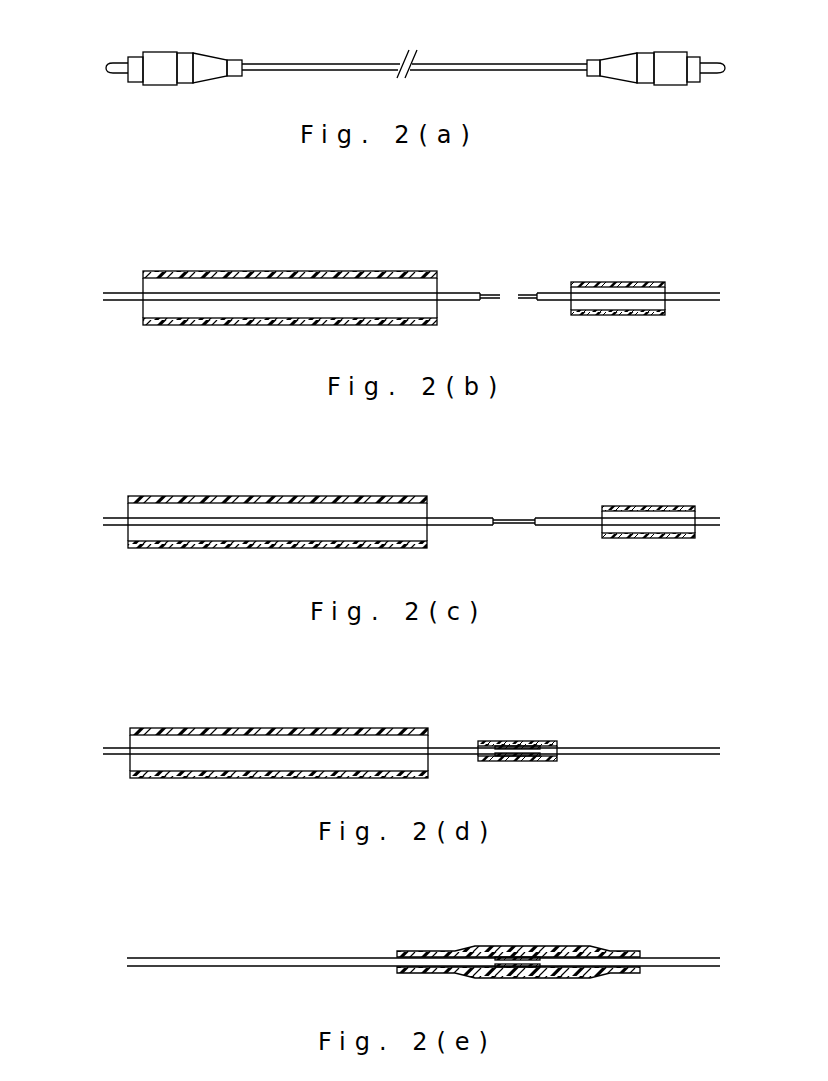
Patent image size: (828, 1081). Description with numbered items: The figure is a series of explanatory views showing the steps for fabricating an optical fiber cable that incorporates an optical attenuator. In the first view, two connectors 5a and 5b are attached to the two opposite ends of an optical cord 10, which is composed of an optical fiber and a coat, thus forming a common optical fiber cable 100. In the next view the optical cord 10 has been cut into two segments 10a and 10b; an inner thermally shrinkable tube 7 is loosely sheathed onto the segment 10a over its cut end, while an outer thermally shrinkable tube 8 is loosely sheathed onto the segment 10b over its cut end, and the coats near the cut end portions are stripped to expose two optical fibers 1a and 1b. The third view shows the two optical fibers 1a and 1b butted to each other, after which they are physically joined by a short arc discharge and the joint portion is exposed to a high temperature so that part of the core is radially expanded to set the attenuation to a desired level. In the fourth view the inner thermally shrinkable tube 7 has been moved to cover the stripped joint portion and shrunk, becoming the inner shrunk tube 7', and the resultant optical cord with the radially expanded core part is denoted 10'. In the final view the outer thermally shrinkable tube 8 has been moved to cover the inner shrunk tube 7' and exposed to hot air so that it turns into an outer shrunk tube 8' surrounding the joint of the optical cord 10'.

In FIG. 2A, the common optical fiber cable 100 is at (470, 46).
In FIG. 2A, the optical cord 10 is at (414, 53).
In FIG. 2A, the connector 5a is at (672, 57).
In FIG. 2A, the connector 5b is at (166, 57).
In FIG. 2B, the outer thermally shrinkable tube 8 is at (290, 283).
In FIG. 2C, the outer thermally shrinkable tube 8 is at (277, 507).
In FIG. 2D, the outer thermally shrinkable tube 8 is at (279, 738).
In FIG. 2B, the inner thermally shrinkable tube 7 is at (618, 284).
In FIG. 2C, the inner thermally shrinkable tube 7 is at (650, 509).
In FIG. 2B, the optical cord segment 10a is at (541, 292).
In FIG. 2C, the optical cord segment 10a is at (552, 517).
In FIG. 2B, the optical cord segment 10b is at (462, 292).
In FIG. 2C, the optical cord segment 10b is at (470, 517).
In FIG. 2B, the optical fiber 1a is at (530, 302).
In FIG. 2C, the optical fiber 1a is at (524, 527).
In FIG. 2B, the optical fiber 1b is at (496, 302).
In FIG. 2C, the optical fiber 1b is at (503, 527).
In FIG. 2D, the inner shrunk tube 7' is at (522, 735).
In FIG. 2E, the inner shrunk tube 7' is at (551, 940).
In FIG. 2E, the outer shrunk tube 8' is at (518, 946).
In FIG. 2D, the resultant optical cord 10' is at (411, 728).
In FIG. 2E, the resultant optical cord 10' is at (423, 948).